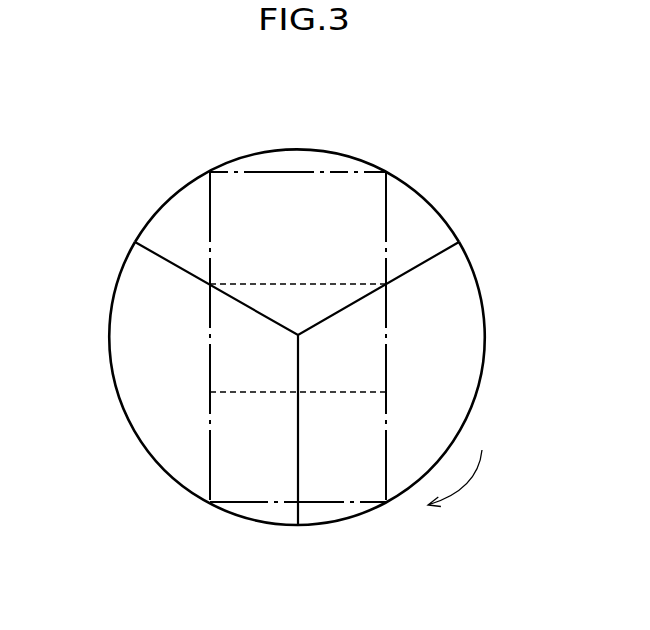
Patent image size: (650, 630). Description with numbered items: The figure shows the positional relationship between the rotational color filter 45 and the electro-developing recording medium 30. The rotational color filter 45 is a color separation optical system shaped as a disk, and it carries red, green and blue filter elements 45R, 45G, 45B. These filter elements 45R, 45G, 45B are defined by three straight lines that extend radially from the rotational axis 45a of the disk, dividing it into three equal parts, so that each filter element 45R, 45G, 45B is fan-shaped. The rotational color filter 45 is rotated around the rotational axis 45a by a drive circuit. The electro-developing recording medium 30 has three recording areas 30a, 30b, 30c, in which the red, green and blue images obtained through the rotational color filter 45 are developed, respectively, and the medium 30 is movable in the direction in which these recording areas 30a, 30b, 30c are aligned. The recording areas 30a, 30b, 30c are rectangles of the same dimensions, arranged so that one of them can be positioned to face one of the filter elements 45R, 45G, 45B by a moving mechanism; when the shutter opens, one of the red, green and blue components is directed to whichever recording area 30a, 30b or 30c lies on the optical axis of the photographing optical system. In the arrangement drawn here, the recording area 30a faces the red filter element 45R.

The electro-developing recording medium 30 is at (298, 309).
The recording area 30a is at (295, 190).
The recording area 30b is at (228, 315).
The recording area 30c is at (223, 482).
The rotational color filter 45 is at (295, 337).
The filter element 45R is at (416, 213).
The filter element 45G is at (123, 388).
The filter element 45B is at (467, 387).
The rotational axis 45a is at (298, 335).